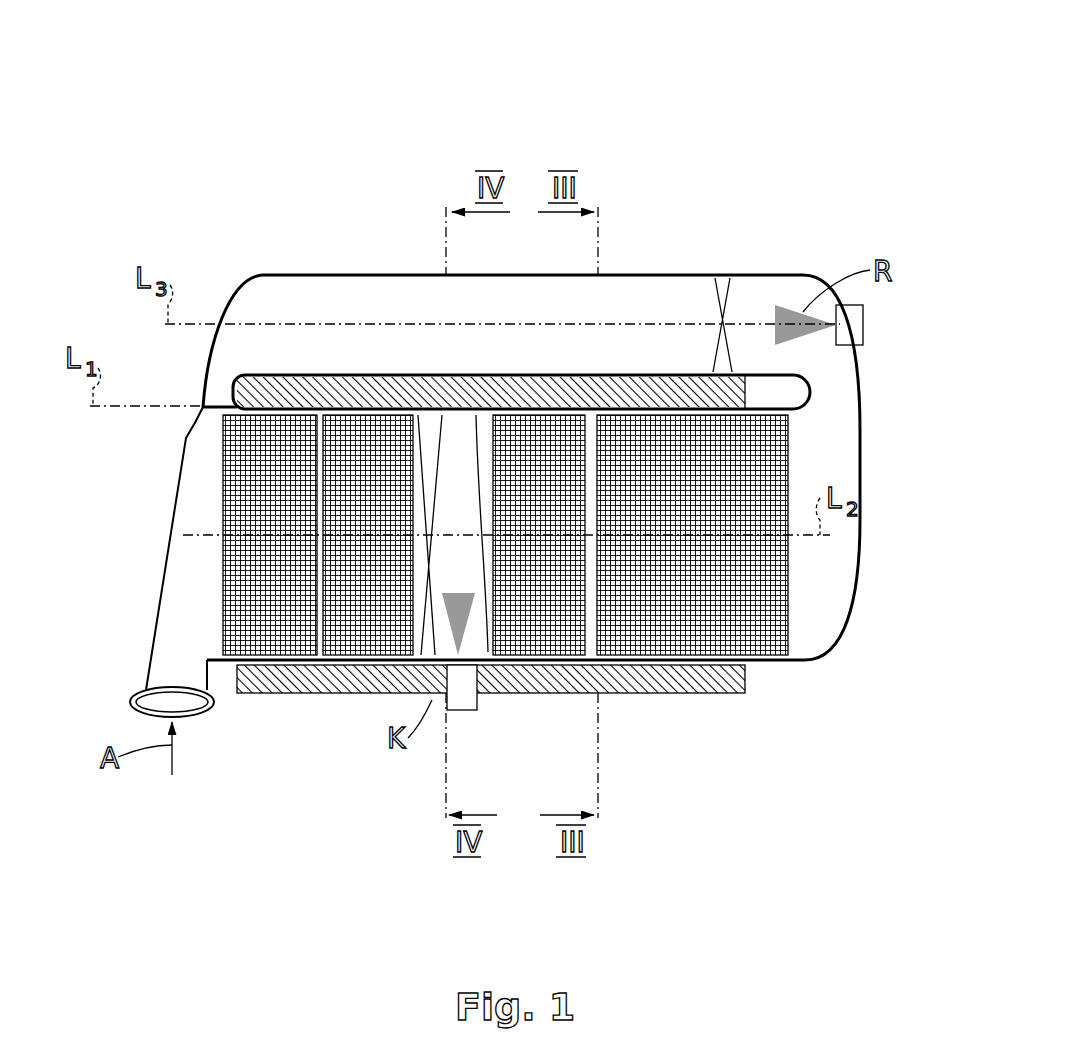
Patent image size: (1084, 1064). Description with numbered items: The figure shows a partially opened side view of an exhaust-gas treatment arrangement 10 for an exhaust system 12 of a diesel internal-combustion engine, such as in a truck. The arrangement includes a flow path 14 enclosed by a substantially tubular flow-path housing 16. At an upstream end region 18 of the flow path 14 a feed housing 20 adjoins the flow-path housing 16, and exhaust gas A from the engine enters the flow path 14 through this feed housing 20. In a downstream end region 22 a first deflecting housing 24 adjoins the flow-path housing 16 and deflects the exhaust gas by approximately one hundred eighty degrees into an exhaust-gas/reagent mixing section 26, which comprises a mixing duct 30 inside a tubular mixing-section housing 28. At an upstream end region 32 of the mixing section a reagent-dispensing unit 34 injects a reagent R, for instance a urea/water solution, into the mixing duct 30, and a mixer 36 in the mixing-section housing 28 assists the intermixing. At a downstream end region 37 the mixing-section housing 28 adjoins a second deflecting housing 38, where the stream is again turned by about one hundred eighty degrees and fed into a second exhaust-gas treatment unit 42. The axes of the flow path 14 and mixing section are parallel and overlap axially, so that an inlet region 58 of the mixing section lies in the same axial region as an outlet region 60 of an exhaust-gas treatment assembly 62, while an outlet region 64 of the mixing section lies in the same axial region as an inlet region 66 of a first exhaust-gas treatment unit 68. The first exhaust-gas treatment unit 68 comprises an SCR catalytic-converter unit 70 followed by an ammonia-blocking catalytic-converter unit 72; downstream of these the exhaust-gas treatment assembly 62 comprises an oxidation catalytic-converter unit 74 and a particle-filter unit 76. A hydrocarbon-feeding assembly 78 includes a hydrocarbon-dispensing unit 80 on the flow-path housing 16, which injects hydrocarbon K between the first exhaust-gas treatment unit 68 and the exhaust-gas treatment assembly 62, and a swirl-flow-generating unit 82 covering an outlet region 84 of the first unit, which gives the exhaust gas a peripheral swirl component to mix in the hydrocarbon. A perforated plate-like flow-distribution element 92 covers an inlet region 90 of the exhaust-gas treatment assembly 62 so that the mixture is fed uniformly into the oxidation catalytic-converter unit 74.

The exhaust-gas treatment arrangement 10 is at (712, 160).
The exhaust system 12 is at (148, 128).
The flow path 14 is at (150, 432).
The flow-path housing 16 is at (758, 663).
The upstream end region 18 is at (215, 548).
The feed housing 20 is at (155, 587).
The downstream end region 22 is at (795, 560).
The first deflecting housing 24 is at (840, 622).
The exhaust-gas/reagent mixing section 26 is at (809, 256).
The mixing-section housing 28 is at (652, 275).
The mixing duct 30 is at (405, 305).
The upstream end region 32 is at (767, 248).
The reagent-dispensing unit 34 is at (865, 340).
The mixer 36 is at (722, 278).
The downstream end region 37 is at (256, 248).
The second deflecting housing 38 is at (203, 372).
The second exhaust-gas treatment unit 42 is at (300, 695).
The inlet region 58 is at (797, 295).
The outlet region 60 is at (793, 457).
The exhaust-gas treatment assembly 62 is at (786, 682).
The outlet region 64 is at (258, 295).
The inlet region 66 is at (228, 490).
The first exhaust-gas treatment unit 68 is at (222, 690).
The SCR catalytic-converter unit 70 is at (228, 453).
The ammonia-blocking catalytic-converter unit 72 is at (350, 578).
The oxidation catalytic-converter unit 74 is at (555, 597).
The particle-filter unit 76 is at (775, 580).
The hydrocarbon-feeding assembly 78 is at (453, 720).
The hydrocarbon-dispensing unit 80 is at (478, 703).
The swirl-flow-generating unit 82 is at (320, 643).
The outlet region 84 is at (350, 600).
The inlet region 90 is at (500, 607).
The flow-distribution element 92 is at (480, 432).